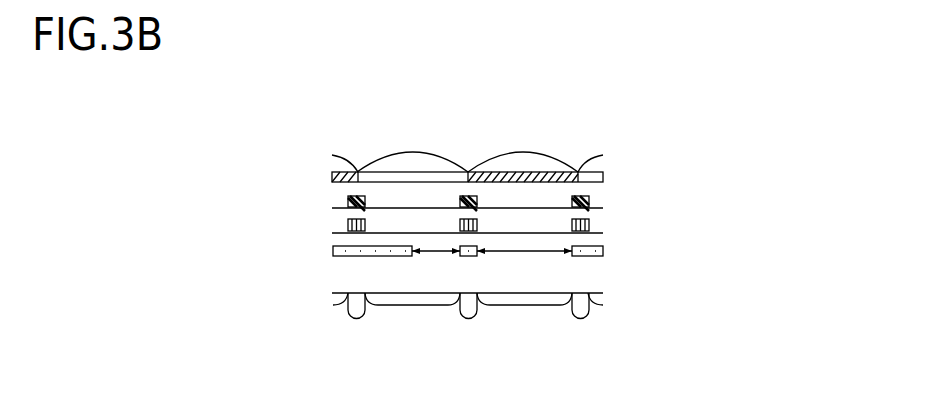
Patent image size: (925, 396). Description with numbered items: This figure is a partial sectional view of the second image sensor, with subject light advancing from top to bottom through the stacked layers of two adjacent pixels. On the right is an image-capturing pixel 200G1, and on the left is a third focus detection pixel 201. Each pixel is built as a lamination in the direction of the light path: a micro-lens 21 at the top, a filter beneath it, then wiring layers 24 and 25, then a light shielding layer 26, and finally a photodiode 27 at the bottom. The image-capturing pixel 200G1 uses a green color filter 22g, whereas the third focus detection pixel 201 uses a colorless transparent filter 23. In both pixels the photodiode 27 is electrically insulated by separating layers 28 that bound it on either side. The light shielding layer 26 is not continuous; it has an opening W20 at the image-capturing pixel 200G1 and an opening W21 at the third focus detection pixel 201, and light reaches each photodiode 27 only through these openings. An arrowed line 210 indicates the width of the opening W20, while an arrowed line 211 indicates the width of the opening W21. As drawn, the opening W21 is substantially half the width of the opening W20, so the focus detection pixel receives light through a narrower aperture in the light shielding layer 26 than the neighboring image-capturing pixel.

The third focus detection pixel 201 is at (288, 121).
The image-capturing pixel 200G1 is at (755, 86).
The opening W21 is at (429, 248).
The opening W20 is at (542, 248).
The micro-lens 21 is at (403, 160).
The colorless transparent filter 23 is at (430, 177).
The green color filter 22g is at (578, 170).
The wiring layer 24 is at (348, 199).
The wiring layer 25 is at (348, 222).
The light shielding layer 26 is at (333, 249).
The photodiode 27 is at (390, 298).
The separating layers 28 is at (355, 316).
The arrowed line 211 is at (442, 252).
The arrowed line 210 is at (510, 252).